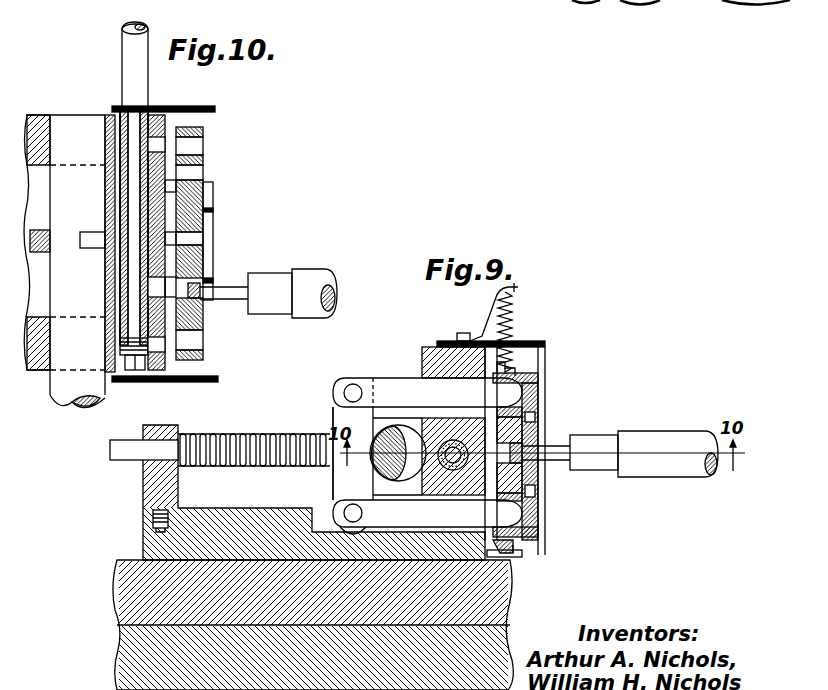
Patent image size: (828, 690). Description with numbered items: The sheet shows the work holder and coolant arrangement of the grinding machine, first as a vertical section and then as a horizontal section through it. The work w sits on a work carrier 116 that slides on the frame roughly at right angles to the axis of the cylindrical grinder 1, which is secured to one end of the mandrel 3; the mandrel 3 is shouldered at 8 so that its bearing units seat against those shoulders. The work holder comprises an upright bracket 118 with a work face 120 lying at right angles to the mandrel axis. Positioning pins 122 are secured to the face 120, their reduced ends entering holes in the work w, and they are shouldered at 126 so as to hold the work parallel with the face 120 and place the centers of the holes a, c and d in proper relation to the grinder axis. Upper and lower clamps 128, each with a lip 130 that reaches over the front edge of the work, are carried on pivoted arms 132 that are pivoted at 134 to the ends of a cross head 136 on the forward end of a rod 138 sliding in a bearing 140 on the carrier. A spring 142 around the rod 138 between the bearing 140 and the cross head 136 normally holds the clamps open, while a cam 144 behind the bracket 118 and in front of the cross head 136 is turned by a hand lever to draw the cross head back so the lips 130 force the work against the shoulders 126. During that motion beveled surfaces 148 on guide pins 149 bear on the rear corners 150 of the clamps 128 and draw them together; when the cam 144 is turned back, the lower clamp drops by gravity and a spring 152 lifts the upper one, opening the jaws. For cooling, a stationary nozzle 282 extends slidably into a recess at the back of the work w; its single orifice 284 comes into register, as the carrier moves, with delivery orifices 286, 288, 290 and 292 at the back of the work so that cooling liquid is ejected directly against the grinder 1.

In FIG. 10, the cylindrical grinder 1 is at (187, 284).
In FIG. 9, the cylindrical grinder 1 is at (532, 451).
In FIG. 10, the mandrel 3 is at (236, 293).
In FIG. 9, the mandrel 3 is at (552, 458).
In FIG. 10, the shoulder 8 is at (293, 300).
In FIG. 9, the shoulder 8 is at (617, 456).
In FIG. 9, the work carrier 116 is at (117, 574).
In FIG. 9, the upright bracket 118 is at (432, 353).
In FIG. 10, the work face 120 is at (165, 156).
In FIG. 9, the work face 120 is at (540, 405).
In FIG. 10, the positioning pins 122 is at (200, 200).
In FIG. 10, the shoulders 126 is at (172, 188).
In FIG. 9, the clamps 128 is at (536, 396).
In FIG. 9, the lips 130 is at (537, 415).
In FIG. 9, the pivoted arm 132 is at (540, 388).
In FIG. 9, the pivot 134 is at (344, 393).
In FIG. 10, the cross head 136 is at (45, 240).
In FIG. 9, the cross head 136 is at (345, 418).
In FIG. 9, the rod 138 is at (132, 451).
In FIG. 9, the bearing 140 is at (152, 489).
In FIG. 9, the spring 142 is at (263, 468).
In FIG. 10, the cam 144 is at (72, 121).
In FIG. 9, the cam 144 is at (395, 459).
In FIG. 9, the beveled surfaces 148 is at (512, 369).
In FIG. 9, the guide pins 149 is at (508, 356).
In FIG. 9, the rear corners 150 is at (540, 372).
In FIG. 9, the spring 152 is at (512, 304).
In FIG. 10, the nozzle 282 is at (128, 75).
In FIG. 9, the nozzle 282 is at (441, 418).
In FIG. 10, the orifice 284 is at (157, 288).
In FIG. 10, the delivery orifice 286 is at (175, 373).
In FIG. 10, the delivery orifice 288 is at (140, 300).
In FIG. 9, the delivery orifice 288 is at (478, 460).
In FIG. 10, the delivery orifice 290 is at (158, 242).
In FIG. 10, the delivery orifice 292 is at (158, 138).
In FIG. 9, the delivery orifice 292 is at (491, 344).
In FIG. 10, the hole a is at (198, 342).
In FIG. 10, the hole c is at (193, 231).
In FIG. 10, the hole d is at (197, 136).
In FIG. 10, the work w is at (205, 211).